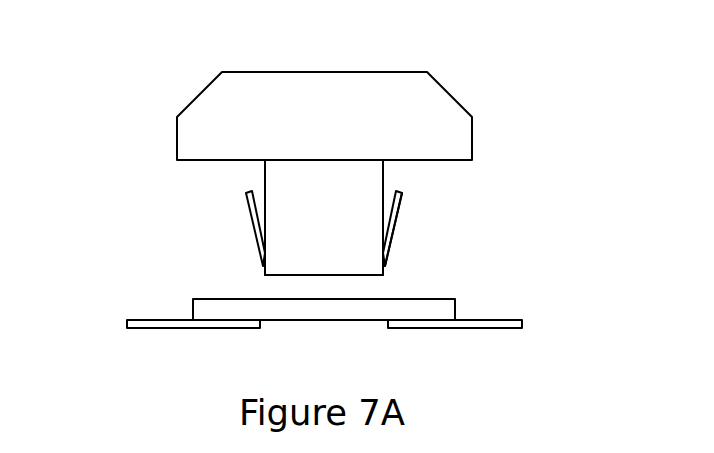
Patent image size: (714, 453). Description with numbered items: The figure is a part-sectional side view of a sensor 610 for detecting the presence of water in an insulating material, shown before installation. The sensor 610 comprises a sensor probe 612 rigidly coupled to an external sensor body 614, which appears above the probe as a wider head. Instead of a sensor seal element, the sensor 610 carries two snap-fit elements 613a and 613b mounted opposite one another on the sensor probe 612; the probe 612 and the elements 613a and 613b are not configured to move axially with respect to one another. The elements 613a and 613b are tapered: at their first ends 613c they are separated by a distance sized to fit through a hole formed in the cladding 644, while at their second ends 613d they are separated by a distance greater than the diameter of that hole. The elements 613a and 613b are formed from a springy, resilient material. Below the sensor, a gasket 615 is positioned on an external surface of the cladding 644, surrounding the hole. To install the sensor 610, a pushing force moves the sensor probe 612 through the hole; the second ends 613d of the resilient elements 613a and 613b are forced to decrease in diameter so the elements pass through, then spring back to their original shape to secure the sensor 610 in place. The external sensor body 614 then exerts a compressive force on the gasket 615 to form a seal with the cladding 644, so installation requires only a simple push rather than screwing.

The sensor 610 is at (119, 58).
The sensor probe 612 is at (265, 172).
The snap-fit element 613a is at (253, 221).
The snap-fit element 613b is at (398, 228).
The first ends of snap-fit elements 613c is at (383, 273).
The second ends of snap-fit elements 613d is at (402, 198).
The external sensor body 614 is at (420, 85).
The gasket 615 is at (193, 306).
The cladding 644 is at (522, 324).